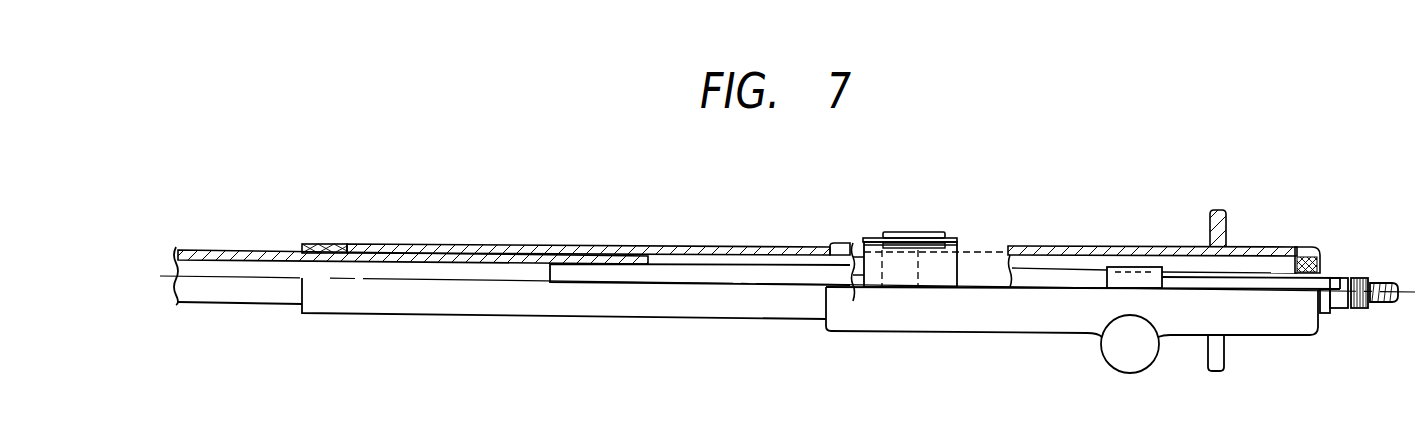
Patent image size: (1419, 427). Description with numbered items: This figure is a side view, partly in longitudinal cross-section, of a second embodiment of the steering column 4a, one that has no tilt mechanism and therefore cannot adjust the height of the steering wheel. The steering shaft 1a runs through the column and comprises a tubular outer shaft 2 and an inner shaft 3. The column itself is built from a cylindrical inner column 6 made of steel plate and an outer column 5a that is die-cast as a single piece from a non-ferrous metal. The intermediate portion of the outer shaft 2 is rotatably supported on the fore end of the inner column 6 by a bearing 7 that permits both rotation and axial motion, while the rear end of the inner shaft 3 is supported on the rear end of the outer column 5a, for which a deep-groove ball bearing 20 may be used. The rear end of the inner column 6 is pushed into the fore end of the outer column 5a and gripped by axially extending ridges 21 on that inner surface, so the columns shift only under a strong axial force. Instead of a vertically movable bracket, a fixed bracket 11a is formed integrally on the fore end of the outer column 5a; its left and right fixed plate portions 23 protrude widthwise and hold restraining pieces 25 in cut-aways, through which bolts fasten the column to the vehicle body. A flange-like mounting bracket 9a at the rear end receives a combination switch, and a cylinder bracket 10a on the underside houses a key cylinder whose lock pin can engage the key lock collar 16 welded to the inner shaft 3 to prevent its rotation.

The bearing 7 is at (318, 246).
The outer shaft 2 is at (411, 246).
The steering shaft 1a is at (559, 268).
The inner column 6 is at (642, 249).
The fixed bracket 11a is at (850, 272).
The fixed plate portions 23 is at (870, 240).
The restraining pieces 25 is at (913, 232).
The ridges 21 is at (880, 290).
The steering column 4a is at (1016, 250).
The outer column 5a is at (1069, 247).
The key lock collar 16 is at (1130, 267).
The mounting bracket 9a is at (1213, 229).
The ball bearing 20 is at (1307, 247).
The cylinder bracket 10a is at (1120, 357).
The inner shaft 3 is at (1262, 281).